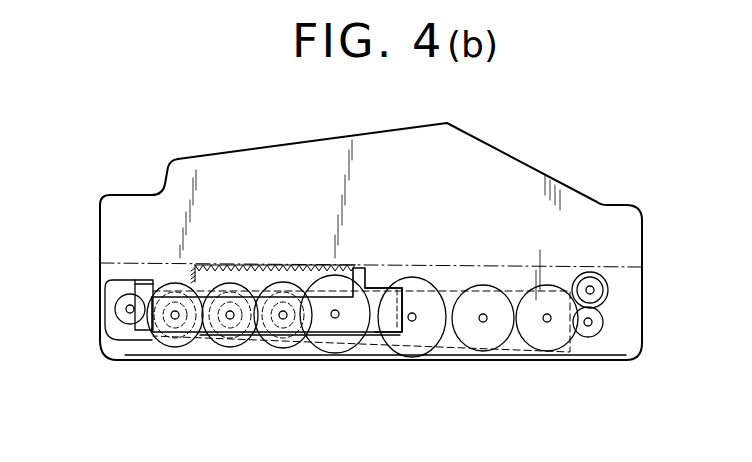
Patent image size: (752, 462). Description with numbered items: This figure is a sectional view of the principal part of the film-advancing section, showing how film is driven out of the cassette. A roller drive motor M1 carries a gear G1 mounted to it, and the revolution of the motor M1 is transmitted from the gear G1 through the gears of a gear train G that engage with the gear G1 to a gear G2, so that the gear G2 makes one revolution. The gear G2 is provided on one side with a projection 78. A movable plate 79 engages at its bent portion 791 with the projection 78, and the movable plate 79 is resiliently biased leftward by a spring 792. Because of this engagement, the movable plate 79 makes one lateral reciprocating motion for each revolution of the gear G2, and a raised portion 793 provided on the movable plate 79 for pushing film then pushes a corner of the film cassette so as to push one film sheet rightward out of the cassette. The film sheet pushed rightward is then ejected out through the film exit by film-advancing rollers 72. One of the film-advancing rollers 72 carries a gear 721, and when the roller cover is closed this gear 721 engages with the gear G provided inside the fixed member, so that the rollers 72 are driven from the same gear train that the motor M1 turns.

The roller drive motor M1 is at (116, 318).
The raised portion 793 is at (140, 292).
The gear G1 is at (131, 322).
The gear G2 is at (420, 340).
The spring 792 is at (246, 263).
The movable plate 79 is at (319, 326).
The projection 78 is at (398, 334).
The bent portion 791 is at (421, 340).
The gear train G is at (538, 338).
The film-advancing rollers 72 is at (600, 281).
The gear 721 is at (605, 292).